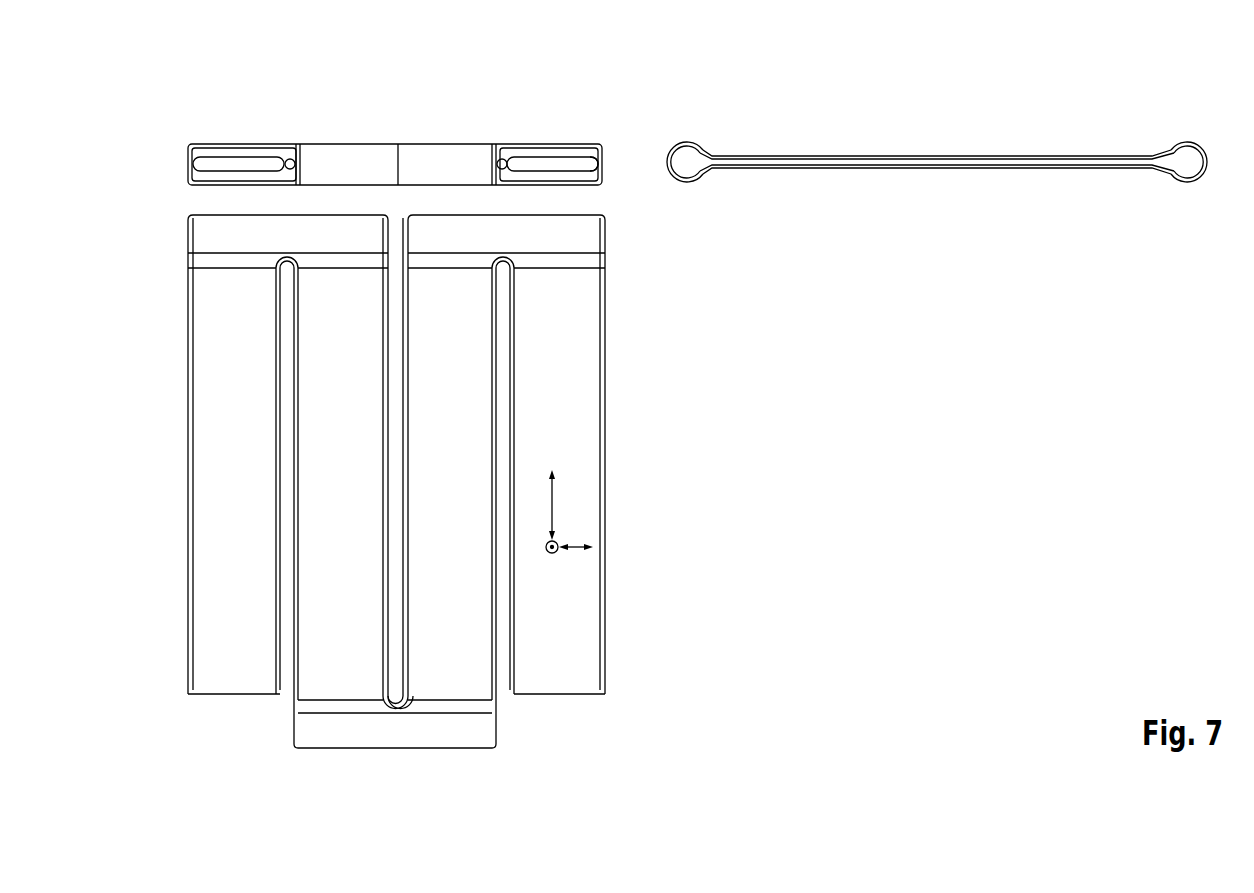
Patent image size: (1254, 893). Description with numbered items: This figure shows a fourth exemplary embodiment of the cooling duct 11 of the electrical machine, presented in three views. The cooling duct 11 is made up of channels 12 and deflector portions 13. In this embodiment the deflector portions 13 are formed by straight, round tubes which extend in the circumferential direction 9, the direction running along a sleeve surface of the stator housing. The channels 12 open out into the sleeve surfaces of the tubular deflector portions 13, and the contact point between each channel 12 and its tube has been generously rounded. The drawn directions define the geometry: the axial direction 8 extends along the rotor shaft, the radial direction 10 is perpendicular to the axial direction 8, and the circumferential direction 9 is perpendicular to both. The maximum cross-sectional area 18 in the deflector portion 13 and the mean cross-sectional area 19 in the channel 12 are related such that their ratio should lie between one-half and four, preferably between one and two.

The axial direction 8 is at (556, 487).
The circumferential direction 9 is at (573, 551).
The radial direction 10 is at (558, 541).
The cooling duct 11 is at (620, 191).
The channel 12 is at (213, 153).
The deflector portion 13 is at (254, 150).
The maximum cross-sectional area 18 is at (403, 157).
The mean cross-sectional area 19 is at (577, 162).